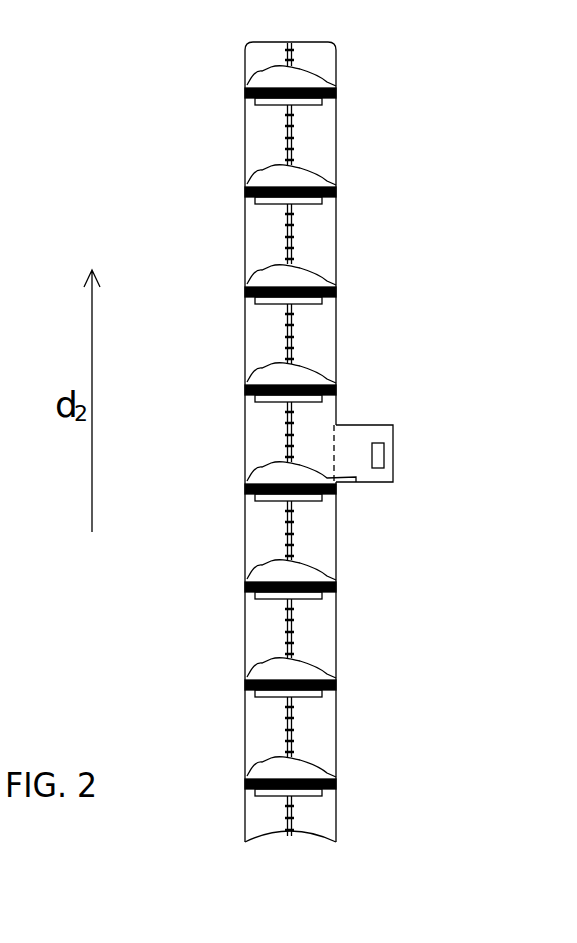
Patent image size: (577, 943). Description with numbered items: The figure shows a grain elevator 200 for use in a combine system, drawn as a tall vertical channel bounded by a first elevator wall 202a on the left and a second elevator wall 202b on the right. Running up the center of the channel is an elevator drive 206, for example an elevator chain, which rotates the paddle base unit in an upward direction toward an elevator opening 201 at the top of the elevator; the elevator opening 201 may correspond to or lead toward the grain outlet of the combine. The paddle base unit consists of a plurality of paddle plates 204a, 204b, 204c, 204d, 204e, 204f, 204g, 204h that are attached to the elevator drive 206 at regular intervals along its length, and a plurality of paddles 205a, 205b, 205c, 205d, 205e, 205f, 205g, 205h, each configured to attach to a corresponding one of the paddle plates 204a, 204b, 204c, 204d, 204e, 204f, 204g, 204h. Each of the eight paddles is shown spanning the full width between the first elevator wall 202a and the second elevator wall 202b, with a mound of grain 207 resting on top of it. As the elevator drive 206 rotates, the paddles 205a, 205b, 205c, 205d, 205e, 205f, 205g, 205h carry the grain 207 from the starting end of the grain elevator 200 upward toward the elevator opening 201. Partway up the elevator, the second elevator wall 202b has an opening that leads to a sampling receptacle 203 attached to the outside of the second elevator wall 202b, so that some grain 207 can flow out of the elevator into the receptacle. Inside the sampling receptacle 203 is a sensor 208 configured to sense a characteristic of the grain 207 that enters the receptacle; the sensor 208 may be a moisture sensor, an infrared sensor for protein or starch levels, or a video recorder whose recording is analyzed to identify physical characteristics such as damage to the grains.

The grain elevator 200 is at (166, 53).
The elevator opening 201 is at (312, 31).
The first elevator wall 202a is at (245, 143).
The second elevator wall 202b is at (336, 151).
The sampling receptacle 203 is at (360, 434).
The paddle plate 204a is at (314, 118).
The paddle plate 204b is at (314, 215).
The paddle plate 204c is at (314, 313).
The paddle plate 204d is at (314, 411).
The paddle plate 204e is at (314, 510).
The paddle plate 204f is at (314, 608).
The paddle plate 204g is at (314, 708).
The paddle plate 204h is at (314, 805).
The paddle 205a is at (245, 102).
The paddle 205b is at (245, 201).
The paddle 205c is at (245, 301).
The paddle 205d is at (245, 397).
The paddle 205e is at (245, 496).
The paddle 205f is at (245, 595).
The paddle 205g is at (245, 694).
The paddle 205h is at (245, 792).
The elevator drive 206 is at (293, 533).
The grain 207 is at (313, 575).
The sensor 208 is at (380, 455).